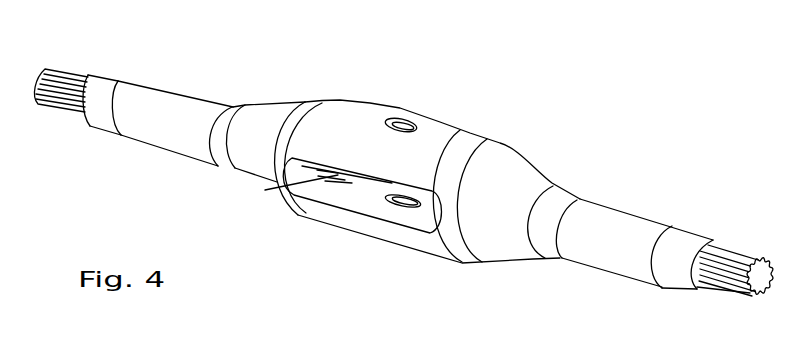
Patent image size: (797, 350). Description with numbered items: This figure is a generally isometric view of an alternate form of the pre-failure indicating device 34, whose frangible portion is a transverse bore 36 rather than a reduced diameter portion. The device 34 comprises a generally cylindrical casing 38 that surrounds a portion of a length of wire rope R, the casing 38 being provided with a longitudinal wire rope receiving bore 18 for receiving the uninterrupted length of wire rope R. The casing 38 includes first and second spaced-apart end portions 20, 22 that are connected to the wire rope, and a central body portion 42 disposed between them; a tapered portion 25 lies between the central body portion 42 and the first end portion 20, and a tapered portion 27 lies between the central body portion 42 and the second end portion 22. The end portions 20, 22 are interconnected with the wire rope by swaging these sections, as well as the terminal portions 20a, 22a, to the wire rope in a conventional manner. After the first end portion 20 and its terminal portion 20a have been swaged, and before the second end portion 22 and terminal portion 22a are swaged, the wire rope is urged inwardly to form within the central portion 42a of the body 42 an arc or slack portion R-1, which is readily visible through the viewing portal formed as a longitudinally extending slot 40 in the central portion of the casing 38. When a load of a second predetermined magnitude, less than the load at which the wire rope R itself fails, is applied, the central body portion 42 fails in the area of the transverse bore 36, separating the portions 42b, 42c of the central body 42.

The longitudinal wire rope receiving bore 18 is at (91, 77).
The first end portion 20 is at (172, 87).
The terminal portion 20a is at (110, 83).
The second end portion 22 is at (650, 223).
The terminal portion 22a is at (673, 267).
The tapered portion 25 is at (266, 108).
The tapered portion 27 is at (522, 188).
The pre-failure indicating device 34 is at (352, 76).
The transverse bore 36 is at (398, 117).
The casing 38 is at (540, 119).
The longitudinally extending slot 40 is at (334, 205).
The central body portion 42 is at (384, 167).
The central portion 42a is at (347, 136).
The portion of central body 42b is at (433, 140).
The portion of central body 42c is at (360, 119).
The wire rope R is at (65, 99).
The slack portion R-1 is at (289, 201).